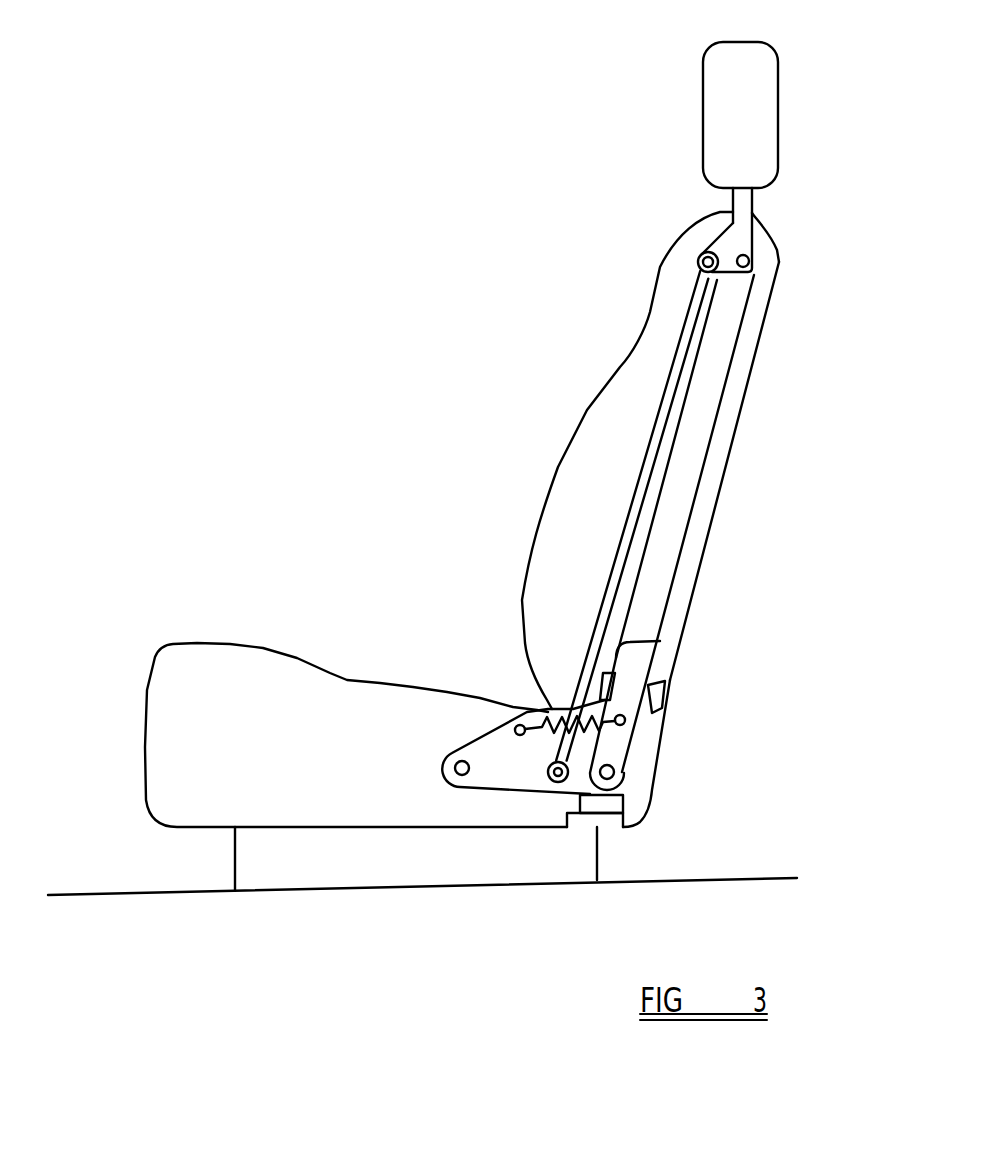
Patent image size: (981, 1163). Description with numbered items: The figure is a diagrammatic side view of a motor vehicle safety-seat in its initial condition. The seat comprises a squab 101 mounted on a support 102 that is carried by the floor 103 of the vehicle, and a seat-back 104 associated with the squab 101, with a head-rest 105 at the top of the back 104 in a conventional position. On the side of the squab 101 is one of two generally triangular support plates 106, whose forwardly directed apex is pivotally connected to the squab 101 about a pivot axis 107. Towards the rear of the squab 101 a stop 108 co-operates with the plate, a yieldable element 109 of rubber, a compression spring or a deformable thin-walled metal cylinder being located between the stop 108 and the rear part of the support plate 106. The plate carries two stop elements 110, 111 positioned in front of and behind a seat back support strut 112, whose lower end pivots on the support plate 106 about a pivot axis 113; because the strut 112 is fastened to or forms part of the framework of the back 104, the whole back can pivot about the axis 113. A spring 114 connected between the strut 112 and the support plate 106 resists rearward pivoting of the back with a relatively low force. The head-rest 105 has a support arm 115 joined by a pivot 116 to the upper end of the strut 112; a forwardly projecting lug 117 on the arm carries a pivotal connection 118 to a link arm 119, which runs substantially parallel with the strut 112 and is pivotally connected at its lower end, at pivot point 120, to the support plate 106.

The squab 101 is at (222, 662).
The support 102 is at (243, 855).
The floor 103 is at (183, 893).
The seat-back 104 is at (560, 467).
The head-rest 105 is at (710, 97).
The support plate 106 is at (508, 768).
The pivot axis 107 is at (467, 776).
The stop 108 is at (603, 830).
The yieldable element 109 is at (605, 807).
The stop element 110 is at (660, 641).
The stop element 111 is at (668, 705).
The seat back support strut 112 is at (683, 497).
The pivot axis 113 is at (612, 766).
The spring 114 is at (537, 707).
The support arm 115 is at (748, 237).
The pivot 116 is at (750, 260).
The lug 117 is at (707, 245).
The pivotal connection 118 is at (698, 268).
The link arm 119 is at (673, 368).
The pivot point 120 is at (555, 782).